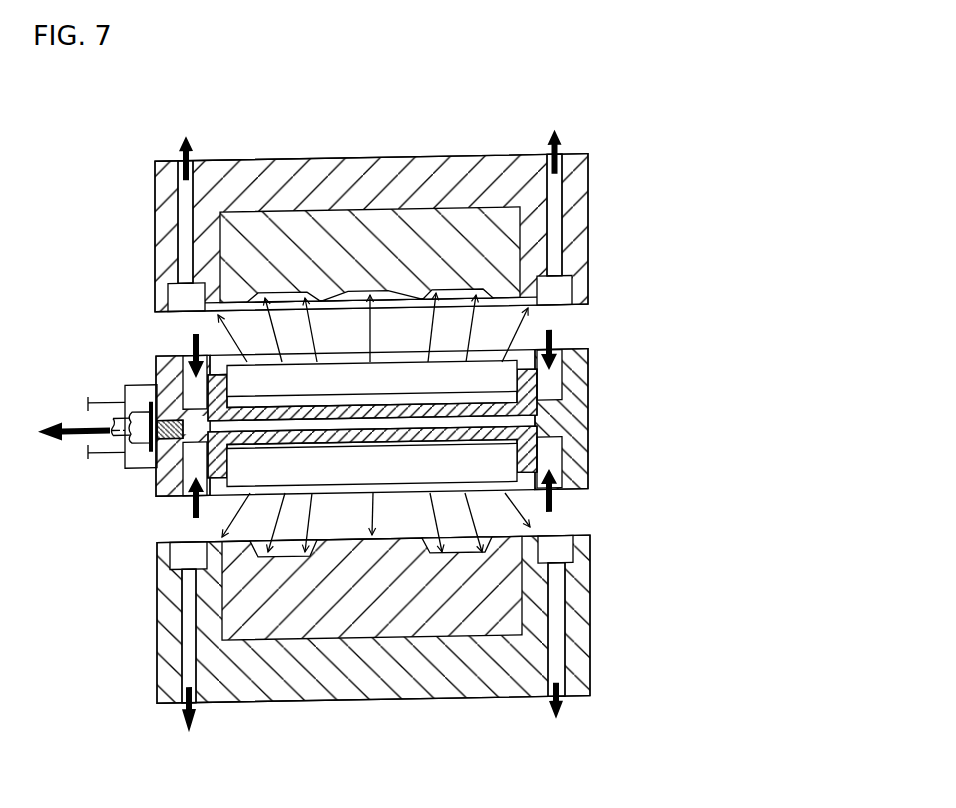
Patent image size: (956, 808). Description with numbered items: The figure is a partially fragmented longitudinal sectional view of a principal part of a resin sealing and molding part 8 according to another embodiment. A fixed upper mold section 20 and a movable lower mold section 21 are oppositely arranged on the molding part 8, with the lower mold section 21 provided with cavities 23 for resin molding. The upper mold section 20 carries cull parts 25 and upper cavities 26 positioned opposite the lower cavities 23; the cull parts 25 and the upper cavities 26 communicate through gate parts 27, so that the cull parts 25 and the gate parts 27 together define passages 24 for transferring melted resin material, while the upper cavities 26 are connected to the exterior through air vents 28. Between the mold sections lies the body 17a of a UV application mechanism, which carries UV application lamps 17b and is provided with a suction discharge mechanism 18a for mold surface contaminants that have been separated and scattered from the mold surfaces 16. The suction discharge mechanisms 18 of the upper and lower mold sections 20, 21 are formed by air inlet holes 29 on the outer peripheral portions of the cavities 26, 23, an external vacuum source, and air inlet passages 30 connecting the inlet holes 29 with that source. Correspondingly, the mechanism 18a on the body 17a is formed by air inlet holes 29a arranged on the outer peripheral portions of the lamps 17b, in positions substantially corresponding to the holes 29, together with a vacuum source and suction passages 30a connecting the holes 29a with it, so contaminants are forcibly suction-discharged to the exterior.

The resin sealing and molding part 8 is at (684, 84).
The mold surfaces 16 is at (297, 295).
The body of UV application mechanism 17a is at (565, 420).
The UV application lamps 17b is at (497, 382).
The suction discharge mechanisms 18 is at (557, 218).
The suction discharge mechanism for mold surface contaminants 18a is at (193, 458).
The fixed upper mold section 20 is at (573, 173).
The movable lower mold section 21 is at (577, 643).
The cavities 23 is at (286, 552).
The passages 24 is at (426, 98).
The cull parts 25 is at (385, 291).
The upper cavities 26 is at (287, 291).
The gate parts 27 is at (332, 292).
The air vents 28 is at (210, 310).
The air inlet holes 29 is at (183, 300).
The air inlet holes 29a is at (190, 385).
The air inlet passages 30 is at (393, 428).
The suction passages 30a is at (89, 458).